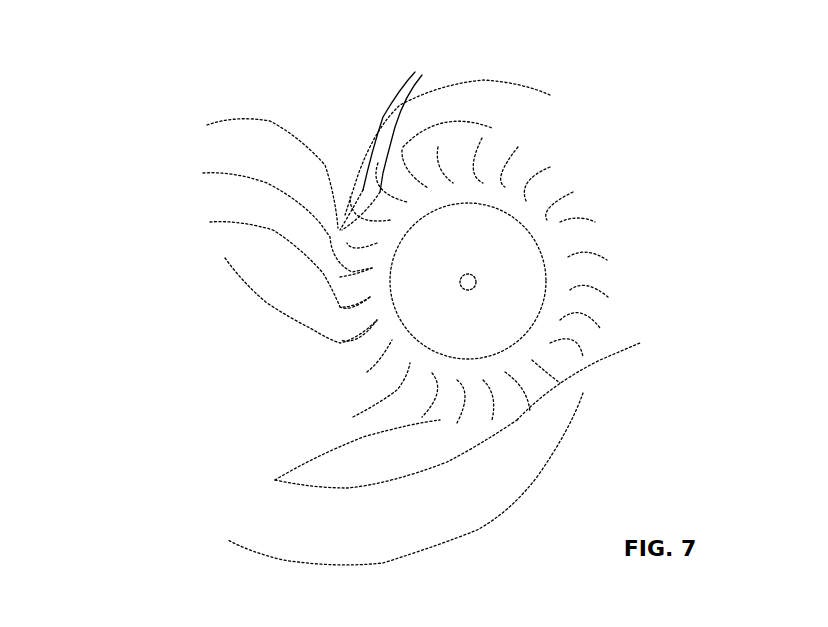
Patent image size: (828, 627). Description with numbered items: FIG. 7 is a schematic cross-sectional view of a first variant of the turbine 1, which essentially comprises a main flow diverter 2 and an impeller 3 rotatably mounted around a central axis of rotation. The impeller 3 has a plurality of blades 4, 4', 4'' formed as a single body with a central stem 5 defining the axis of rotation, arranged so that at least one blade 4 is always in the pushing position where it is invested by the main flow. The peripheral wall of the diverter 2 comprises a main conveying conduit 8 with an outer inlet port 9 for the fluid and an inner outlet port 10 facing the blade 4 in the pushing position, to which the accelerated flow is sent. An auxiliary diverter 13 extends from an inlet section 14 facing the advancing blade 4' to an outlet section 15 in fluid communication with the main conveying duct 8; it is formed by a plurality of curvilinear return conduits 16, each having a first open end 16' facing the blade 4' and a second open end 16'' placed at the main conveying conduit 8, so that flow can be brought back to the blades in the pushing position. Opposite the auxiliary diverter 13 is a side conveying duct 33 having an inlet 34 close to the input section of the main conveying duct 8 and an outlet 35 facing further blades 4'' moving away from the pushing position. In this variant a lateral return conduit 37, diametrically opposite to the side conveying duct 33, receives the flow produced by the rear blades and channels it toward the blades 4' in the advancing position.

The turbine 1 is at (598, 137).
The main flow diverter 2 is at (190, 493).
The impeller 3 is at (625, 288).
The blade 4 is at (371, 386).
The blade 4' is at (386, 138).
The blade 4'' is at (593, 373).
The central stem 5 is at (535, 243).
The main conveying conduit 8 is at (291, 394).
The outer inlet port 9 is at (247, 408).
The inner outlet port 10 is at (412, 408).
The auxiliary diverter 13 is at (232, 110).
The inlet section 14 is at (336, 228).
The outlet section 15 is at (198, 192).
The return conduits 16 is at (290, 238).
The first open end 16' is at (338, 172).
The second open end 16'' is at (173, 188).
The side conveying duct 33 is at (432, 522).
The inlet 34 is at (240, 522).
The outlet 35 is at (578, 392).
The lateral return conduit 37 is at (497, 105).